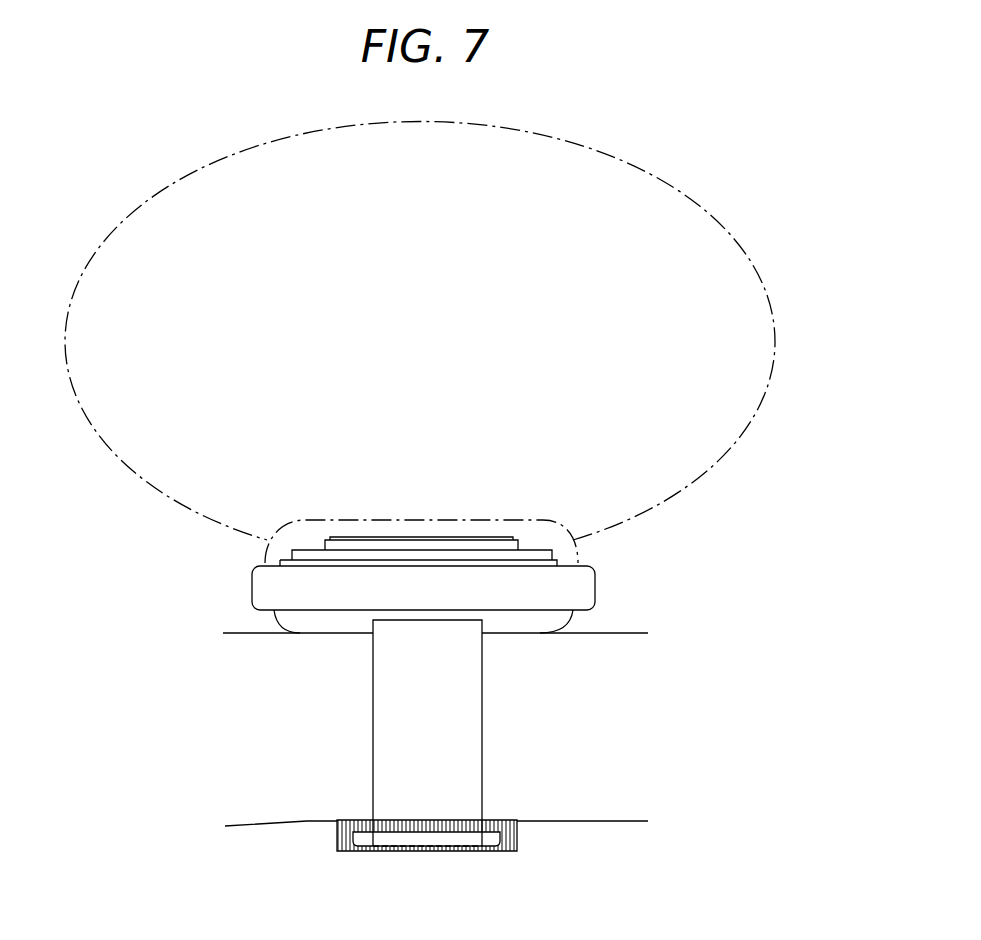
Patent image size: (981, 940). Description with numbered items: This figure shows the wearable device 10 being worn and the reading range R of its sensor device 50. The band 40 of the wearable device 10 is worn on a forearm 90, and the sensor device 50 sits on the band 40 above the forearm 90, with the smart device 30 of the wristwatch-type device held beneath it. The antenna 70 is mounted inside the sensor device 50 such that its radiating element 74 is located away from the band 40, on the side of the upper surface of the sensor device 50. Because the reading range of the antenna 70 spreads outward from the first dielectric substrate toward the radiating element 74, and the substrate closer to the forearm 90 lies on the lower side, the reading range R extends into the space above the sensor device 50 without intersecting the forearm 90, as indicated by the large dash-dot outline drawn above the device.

The reading range R is at (607, 153).
The wearable device 10 is at (390, 552).
The smart device 30 is at (510, 852).
The band 40 is at (465, 760).
The sensor device 50 is at (595, 588).
The antenna 70 is at (502, 540).
The radiating element 74 is at (355, 540).
The forearm 90 is at (295, 798).